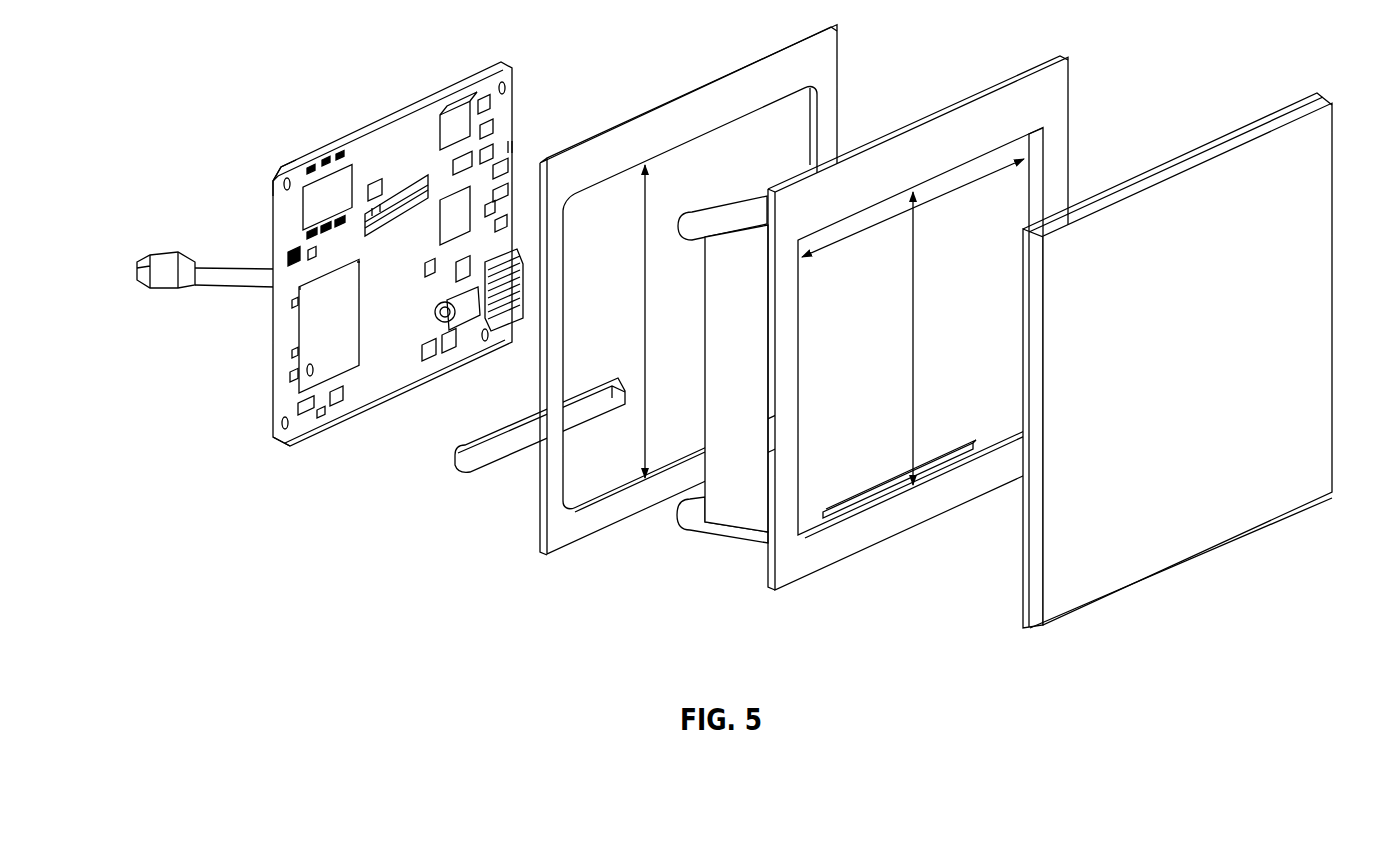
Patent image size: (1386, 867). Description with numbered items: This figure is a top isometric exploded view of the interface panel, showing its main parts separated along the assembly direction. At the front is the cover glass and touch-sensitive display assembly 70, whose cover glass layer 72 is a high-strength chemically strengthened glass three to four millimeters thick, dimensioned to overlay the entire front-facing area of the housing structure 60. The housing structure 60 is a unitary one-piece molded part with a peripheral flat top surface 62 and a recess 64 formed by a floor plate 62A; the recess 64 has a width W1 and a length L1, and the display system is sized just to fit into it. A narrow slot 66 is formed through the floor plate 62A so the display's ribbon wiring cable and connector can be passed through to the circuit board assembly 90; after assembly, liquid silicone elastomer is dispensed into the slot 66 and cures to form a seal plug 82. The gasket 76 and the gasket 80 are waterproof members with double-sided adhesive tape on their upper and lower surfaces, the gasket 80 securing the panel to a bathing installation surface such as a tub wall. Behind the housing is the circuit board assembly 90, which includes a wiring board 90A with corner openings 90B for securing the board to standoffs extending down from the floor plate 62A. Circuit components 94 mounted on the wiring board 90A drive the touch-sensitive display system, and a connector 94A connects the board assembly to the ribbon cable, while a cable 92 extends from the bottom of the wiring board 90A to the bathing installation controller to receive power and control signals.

The housing structure 60 is at (905, 301).
The peripheral flat top surface 62 is at (1058, 98).
The floor plate 62A is at (867, 396).
The recess 64 is at (1003, 210).
The narrow slot 66 is at (870, 488).
The cover glass and touch-sensitive display assembly 70 is at (1145, 343).
The cover glass layer 72 is at (1207, 507).
The gasket 76 is at (1020, 545).
The gasket 80 is at (725, 73).
The seal plug 82 is at (488, 463).
The circuit board assembly 90 is at (384, 248).
The wiring board 90A is at (382, 380).
The corner openings 90B is at (280, 168).
The cable 92 is at (233, 268).
The circuit components 94 is at (416, 283).
The connector 94A is at (407, 192).
The length dimension of recess L1 is at (855, 243).
The width dimension of recess W1 is at (912, 320).